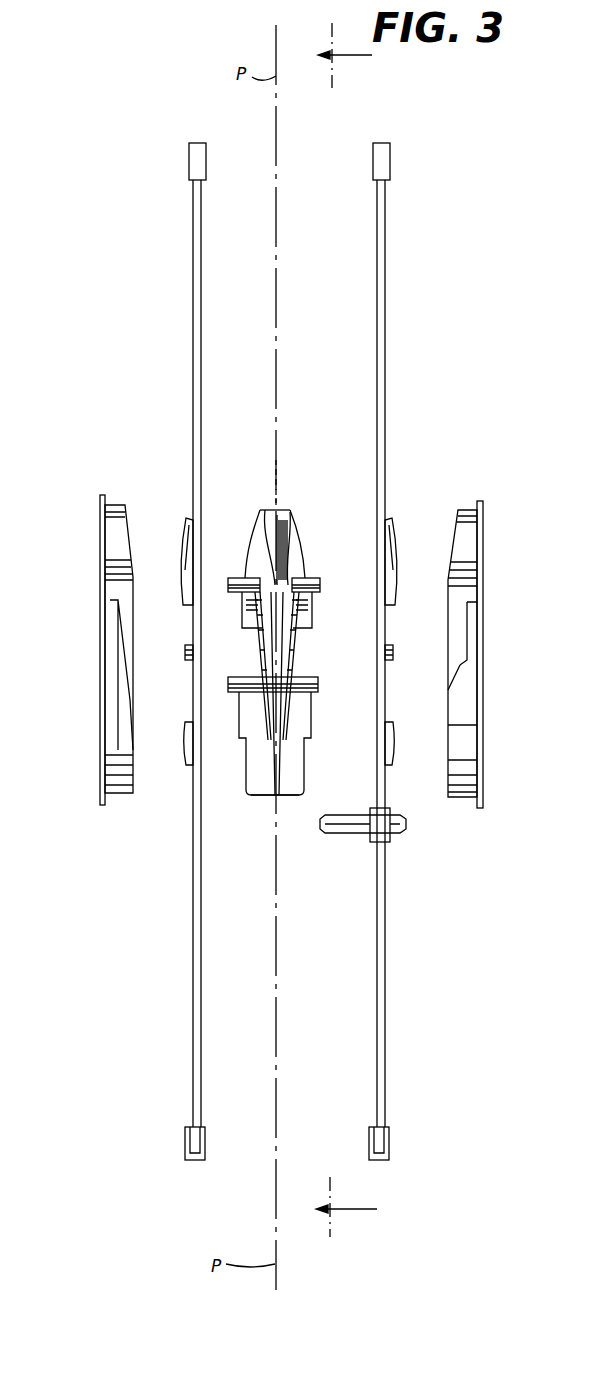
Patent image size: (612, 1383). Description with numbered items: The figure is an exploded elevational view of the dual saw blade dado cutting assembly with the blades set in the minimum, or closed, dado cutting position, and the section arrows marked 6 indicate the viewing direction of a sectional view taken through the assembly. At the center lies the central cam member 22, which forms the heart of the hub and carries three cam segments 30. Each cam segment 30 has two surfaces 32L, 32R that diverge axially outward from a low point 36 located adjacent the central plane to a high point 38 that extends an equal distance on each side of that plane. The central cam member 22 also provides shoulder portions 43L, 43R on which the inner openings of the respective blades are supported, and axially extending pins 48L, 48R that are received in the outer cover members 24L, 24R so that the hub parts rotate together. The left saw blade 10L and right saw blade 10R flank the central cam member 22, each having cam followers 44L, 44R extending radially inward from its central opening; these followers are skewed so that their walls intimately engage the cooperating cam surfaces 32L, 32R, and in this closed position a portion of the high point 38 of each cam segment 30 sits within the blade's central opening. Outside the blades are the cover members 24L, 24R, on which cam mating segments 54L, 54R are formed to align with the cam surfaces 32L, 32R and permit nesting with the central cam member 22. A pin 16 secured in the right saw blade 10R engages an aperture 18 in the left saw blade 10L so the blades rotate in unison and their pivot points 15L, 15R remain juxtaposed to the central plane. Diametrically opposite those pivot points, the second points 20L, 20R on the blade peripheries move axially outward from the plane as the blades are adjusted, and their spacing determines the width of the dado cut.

The section line 6- 6 is at (346, 631).
The left circular saw blade 10L is at (188, 297).
The right circular saw blade 10R is at (390, 302).
The aperture 18 is at (192, 838).
The second point on left saw blade 20L is at (190, 148).
The second point on right saw blade 20R is at (383, 144).
The left pivot point 15L is at (190, 1160).
The right pivot point 15R is at (374, 1162).
The pin 16 is at (355, 835).
The left outer cover member 24L is at (102, 520).
The right outer cover member 24R is at (482, 510).
The left cam mating segment 54L is at (108, 636).
The right cam mating segment 54R is at (470, 622).
The left cam follower 44L is at (186, 575).
The right cam follower 44R is at (392, 565).
The cam segment 30 is at (262, 520).
The central cam member 22 is at (282, 507).
The left cam surface 32L is at (258, 530).
The right cam surface 32R is at (298, 540).
The left shoulder portion 43L is at (248, 580).
The right shoulder portion 43R is at (300, 580).
The left axially extending pin 48L is at (230, 585).
The right axially extending pin 48R is at (318, 585).
The low point 36 is at (272, 797).
The high point 38 is at (289, 797).